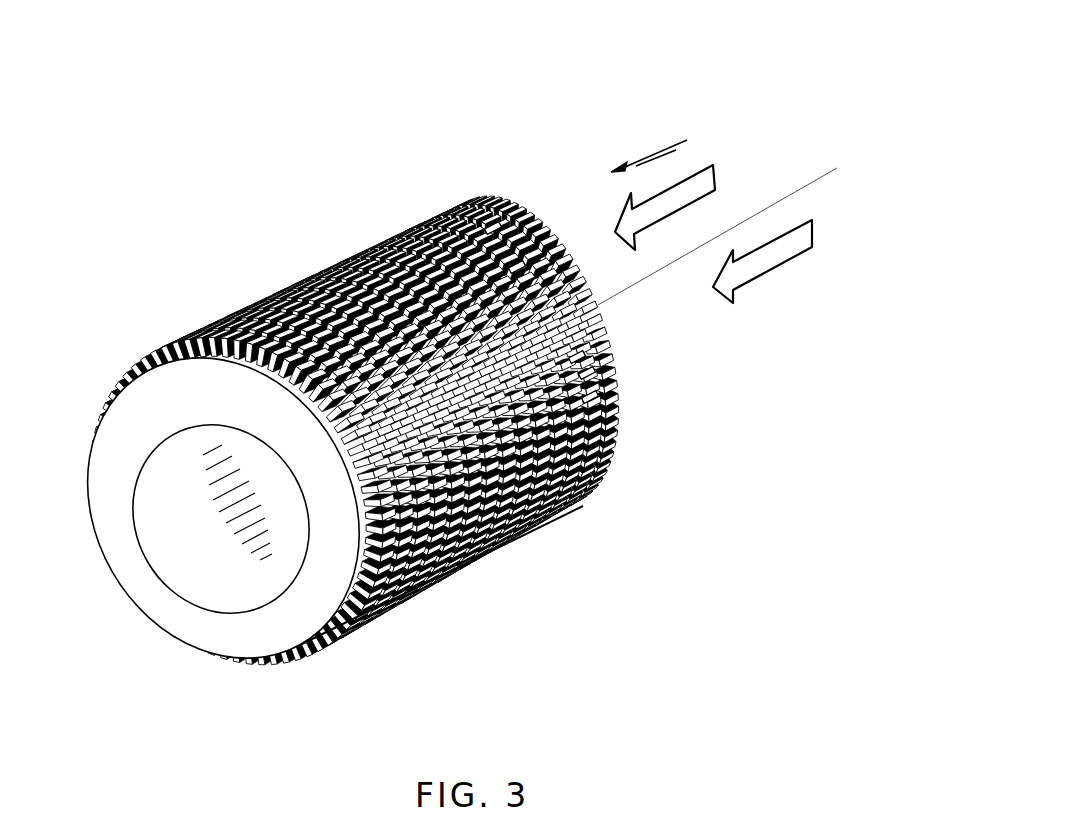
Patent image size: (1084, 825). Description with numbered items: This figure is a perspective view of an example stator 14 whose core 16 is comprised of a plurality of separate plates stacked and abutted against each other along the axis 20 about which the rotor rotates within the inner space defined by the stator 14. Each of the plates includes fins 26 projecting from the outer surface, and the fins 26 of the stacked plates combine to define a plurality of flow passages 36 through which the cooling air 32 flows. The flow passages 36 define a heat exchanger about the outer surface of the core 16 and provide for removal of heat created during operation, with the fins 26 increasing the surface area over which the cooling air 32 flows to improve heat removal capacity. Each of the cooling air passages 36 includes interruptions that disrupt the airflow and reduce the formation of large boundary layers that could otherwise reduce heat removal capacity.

The stator 14 is at (664, 146).
The core 16 is at (617, 438).
The axis 20 is at (815, 182).
The fins 26 is at (527, 549).
The cooling air 32 is at (785, 233).
The flow passages 36 is at (517, 267).